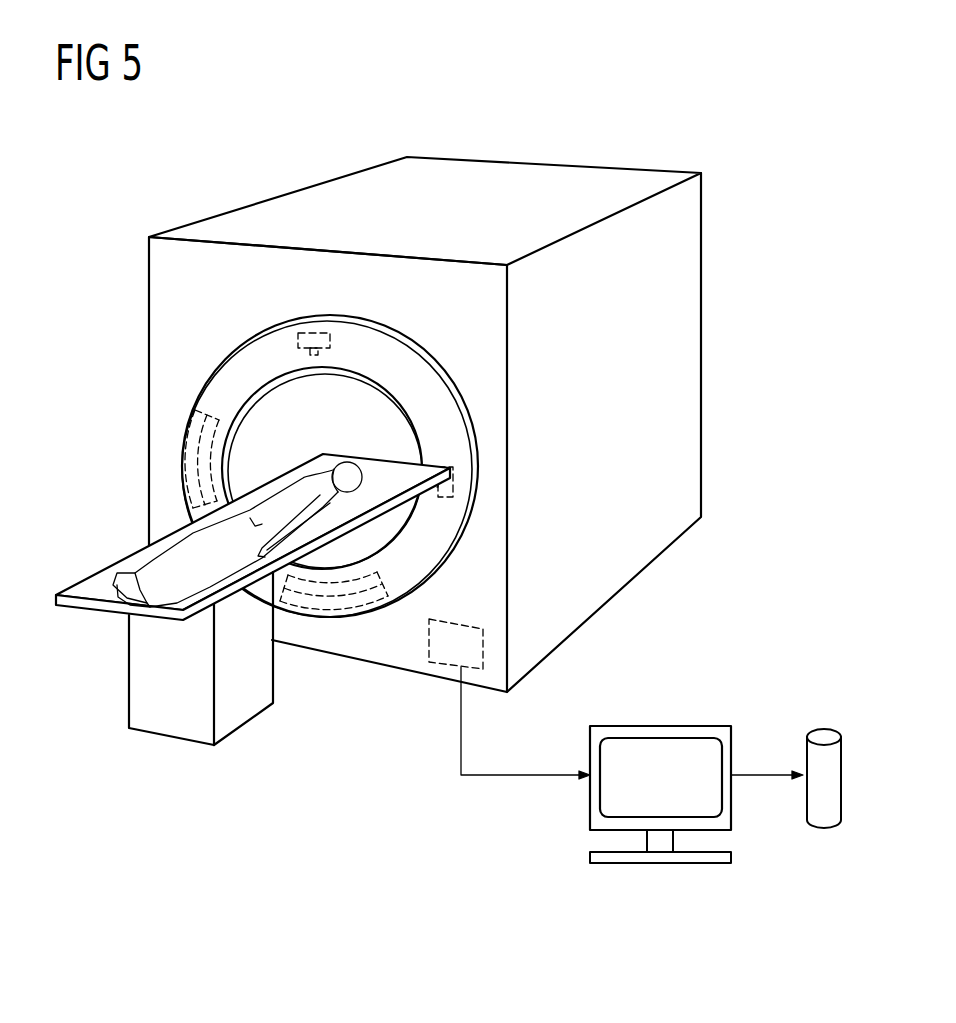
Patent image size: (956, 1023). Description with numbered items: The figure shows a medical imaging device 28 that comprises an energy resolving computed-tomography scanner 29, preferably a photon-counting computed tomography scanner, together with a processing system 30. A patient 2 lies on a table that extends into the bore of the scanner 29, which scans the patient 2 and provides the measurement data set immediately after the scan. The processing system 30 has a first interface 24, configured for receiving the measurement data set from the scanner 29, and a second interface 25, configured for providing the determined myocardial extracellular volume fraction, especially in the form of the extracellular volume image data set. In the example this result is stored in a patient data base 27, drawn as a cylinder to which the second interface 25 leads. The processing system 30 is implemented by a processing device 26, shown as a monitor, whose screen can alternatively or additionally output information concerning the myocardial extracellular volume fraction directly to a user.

The patient 2 is at (288, 502).
The first interface 24 is at (580, 763).
The second interface 25 is at (742, 763).
The processing device 26 is at (642, 763).
The patient data base 27 is at (823, 735).
The medical imaging device 28 is at (378, 399).
The energy resolving computed-tomography scanner 29 is at (471, 172).
The processing system 30 is at (715, 733).